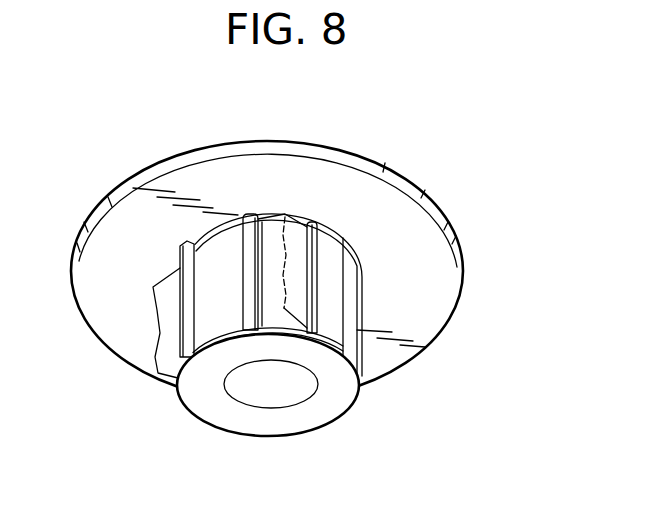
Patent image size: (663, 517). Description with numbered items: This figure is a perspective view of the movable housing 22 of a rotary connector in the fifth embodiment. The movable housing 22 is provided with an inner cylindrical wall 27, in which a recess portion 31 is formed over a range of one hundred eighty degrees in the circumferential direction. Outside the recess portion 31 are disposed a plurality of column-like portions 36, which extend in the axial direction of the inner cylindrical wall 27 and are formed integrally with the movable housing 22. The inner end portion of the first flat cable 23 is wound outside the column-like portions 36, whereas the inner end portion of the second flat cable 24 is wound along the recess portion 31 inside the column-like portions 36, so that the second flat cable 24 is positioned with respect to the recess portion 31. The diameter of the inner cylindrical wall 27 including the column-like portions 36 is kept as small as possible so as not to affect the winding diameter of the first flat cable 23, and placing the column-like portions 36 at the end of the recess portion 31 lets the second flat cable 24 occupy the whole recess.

The movable housing 22 is at (486, 214).
The first flat cable 23 is at (300, 272).
The second flat cable 24 is at (158, 372).
The inner cylindrical wall 27 is at (340, 402).
The recess portion 31 is at (290, 333).
The column-like portions 36 is at (177, 277).